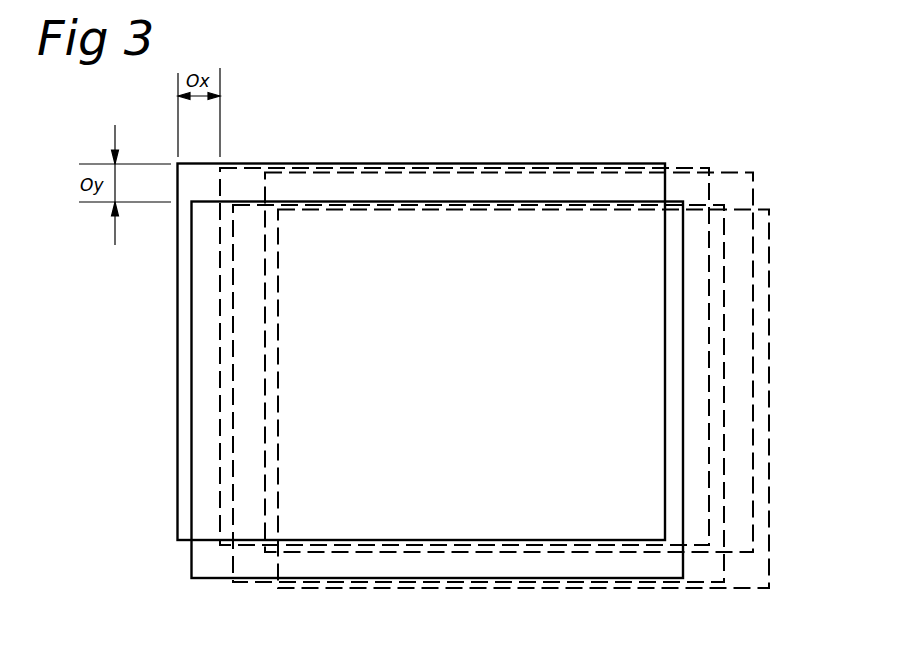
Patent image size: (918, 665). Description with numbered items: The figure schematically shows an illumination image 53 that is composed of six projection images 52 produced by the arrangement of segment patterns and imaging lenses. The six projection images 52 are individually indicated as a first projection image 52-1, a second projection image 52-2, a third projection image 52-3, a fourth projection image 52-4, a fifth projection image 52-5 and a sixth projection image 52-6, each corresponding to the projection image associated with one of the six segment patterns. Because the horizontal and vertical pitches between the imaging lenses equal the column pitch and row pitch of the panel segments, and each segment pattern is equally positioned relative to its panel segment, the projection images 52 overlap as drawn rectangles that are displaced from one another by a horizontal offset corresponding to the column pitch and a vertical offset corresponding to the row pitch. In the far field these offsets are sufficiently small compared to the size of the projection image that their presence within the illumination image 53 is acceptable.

The projection images 52 is at (650, 161).
The first projection image 52-1 is at (200, 162).
The second projection image 52-2 is at (380, 165).
The third projection image 52-3 is at (519, 165).
The fourth projection image 52-4 is at (208, 579).
The fifth projection image 52-5 is at (265, 588).
The sixth projection image 52-6 is at (333, 591).
The illumination image 53 is at (770, 135).